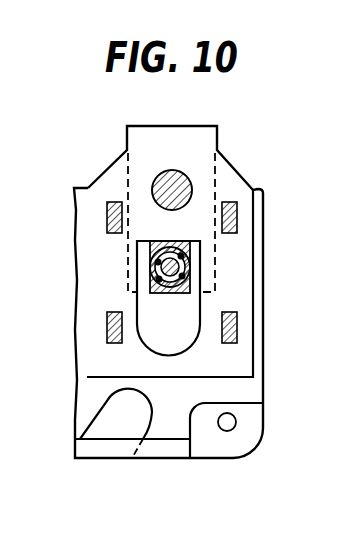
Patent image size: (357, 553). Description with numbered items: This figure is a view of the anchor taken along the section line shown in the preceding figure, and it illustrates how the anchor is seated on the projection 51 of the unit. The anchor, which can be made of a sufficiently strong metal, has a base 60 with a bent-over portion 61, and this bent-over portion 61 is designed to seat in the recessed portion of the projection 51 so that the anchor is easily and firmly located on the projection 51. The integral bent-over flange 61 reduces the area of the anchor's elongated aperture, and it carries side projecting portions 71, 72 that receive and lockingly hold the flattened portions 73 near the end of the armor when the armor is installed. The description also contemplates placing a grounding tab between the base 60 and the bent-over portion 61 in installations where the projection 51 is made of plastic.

The projection 51 is at (220, 441).
The base 60 is at (230, 185).
The bent-over portion 61 is at (128, 144).
The side projecting portion 71 is at (128, 268).
The side projecting portion 72 is at (207, 273).
The flattened portions 73 is at (187, 293).